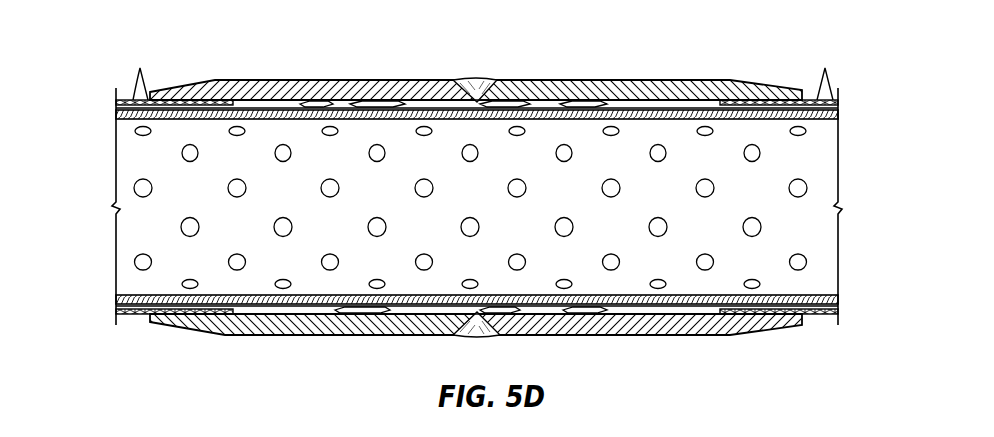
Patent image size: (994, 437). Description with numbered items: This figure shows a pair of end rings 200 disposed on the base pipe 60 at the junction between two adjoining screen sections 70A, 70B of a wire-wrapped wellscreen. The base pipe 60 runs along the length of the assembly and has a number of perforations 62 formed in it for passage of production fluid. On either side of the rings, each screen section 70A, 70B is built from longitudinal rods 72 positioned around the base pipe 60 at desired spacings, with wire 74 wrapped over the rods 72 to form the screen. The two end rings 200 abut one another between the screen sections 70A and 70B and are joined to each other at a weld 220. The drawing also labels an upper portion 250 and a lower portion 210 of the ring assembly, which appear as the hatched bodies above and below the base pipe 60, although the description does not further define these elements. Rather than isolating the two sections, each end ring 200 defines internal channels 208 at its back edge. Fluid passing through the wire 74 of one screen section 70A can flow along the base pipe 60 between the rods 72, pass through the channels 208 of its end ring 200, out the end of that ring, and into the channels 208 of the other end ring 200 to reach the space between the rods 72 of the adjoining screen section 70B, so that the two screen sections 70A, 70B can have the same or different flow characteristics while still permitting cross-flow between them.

The base pipe 60 is at (116, 116).
The perforations 62 is at (188, 218).
The screen section 70A is at (108, 64).
The screen section 70B is at (848, 65).
The rods 72 is at (116, 102).
The wire 74 is at (482, 72).
The end ring 200 is at (312, 50).
The channels 208 is at (407, 108).
The bottom layer 210 is at (235, 336).
The weld 220 is at (476, 79).
The top layer 250 is at (265, 80).